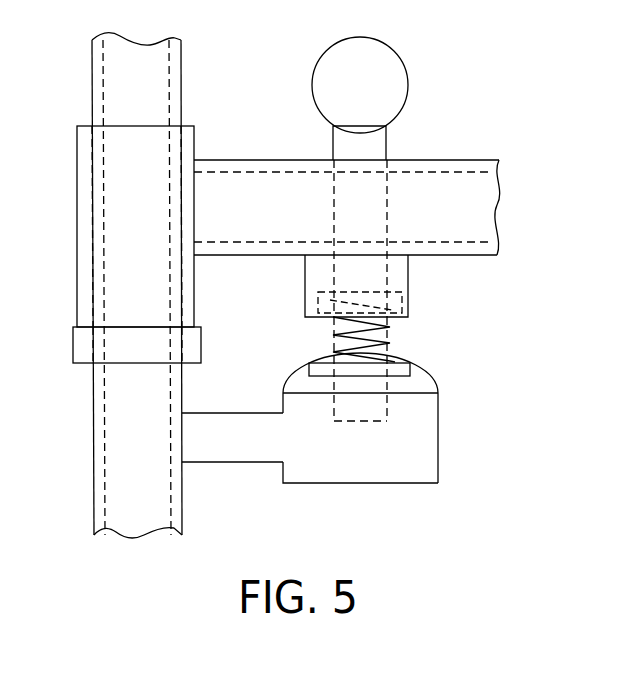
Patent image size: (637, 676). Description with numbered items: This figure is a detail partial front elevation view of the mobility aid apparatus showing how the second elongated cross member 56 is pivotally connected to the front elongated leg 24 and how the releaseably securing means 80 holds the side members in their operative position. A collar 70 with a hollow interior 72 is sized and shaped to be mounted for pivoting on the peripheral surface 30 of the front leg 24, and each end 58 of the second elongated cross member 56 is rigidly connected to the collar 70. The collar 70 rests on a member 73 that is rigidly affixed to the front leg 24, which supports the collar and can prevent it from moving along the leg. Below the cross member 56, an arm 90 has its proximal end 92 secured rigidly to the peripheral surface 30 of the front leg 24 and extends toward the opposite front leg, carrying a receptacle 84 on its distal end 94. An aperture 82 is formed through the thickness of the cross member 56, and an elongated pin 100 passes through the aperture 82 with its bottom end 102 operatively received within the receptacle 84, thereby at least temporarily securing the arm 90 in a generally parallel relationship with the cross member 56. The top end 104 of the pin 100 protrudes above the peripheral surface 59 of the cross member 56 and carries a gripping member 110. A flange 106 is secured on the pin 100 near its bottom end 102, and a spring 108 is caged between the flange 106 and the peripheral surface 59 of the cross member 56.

The front elongated leg 24 is at (118, 77).
The peripheral surface 30 is at (181, 70).
The second elongated cross member 56 is at (475, 182).
The end of the second elongated cross member 58 is at (207, 160).
The peripheral surface of the second elongated cross member 59 is at (462, 258).
The collar 70 is at (194, 130).
The hollow interior 72 is at (92, 170).
The member 73 is at (73, 345).
The releaseably securing means 80 is at (450, 72).
The aperture 82 is at (373, 223).
The receptacle 84 is at (427, 382).
The arm 90 is at (368, 472).
The proximal end 92 is at (190, 463).
The distal end 94 is at (442, 482).
The elongated pin 100 is at (423, 136).
The bottom end 102 is at (386, 421).
The top end 104 is at (333, 138).
The flange 106 is at (318, 367).
The spring 108 is at (395, 338).
The gripping member 110 is at (340, 50).